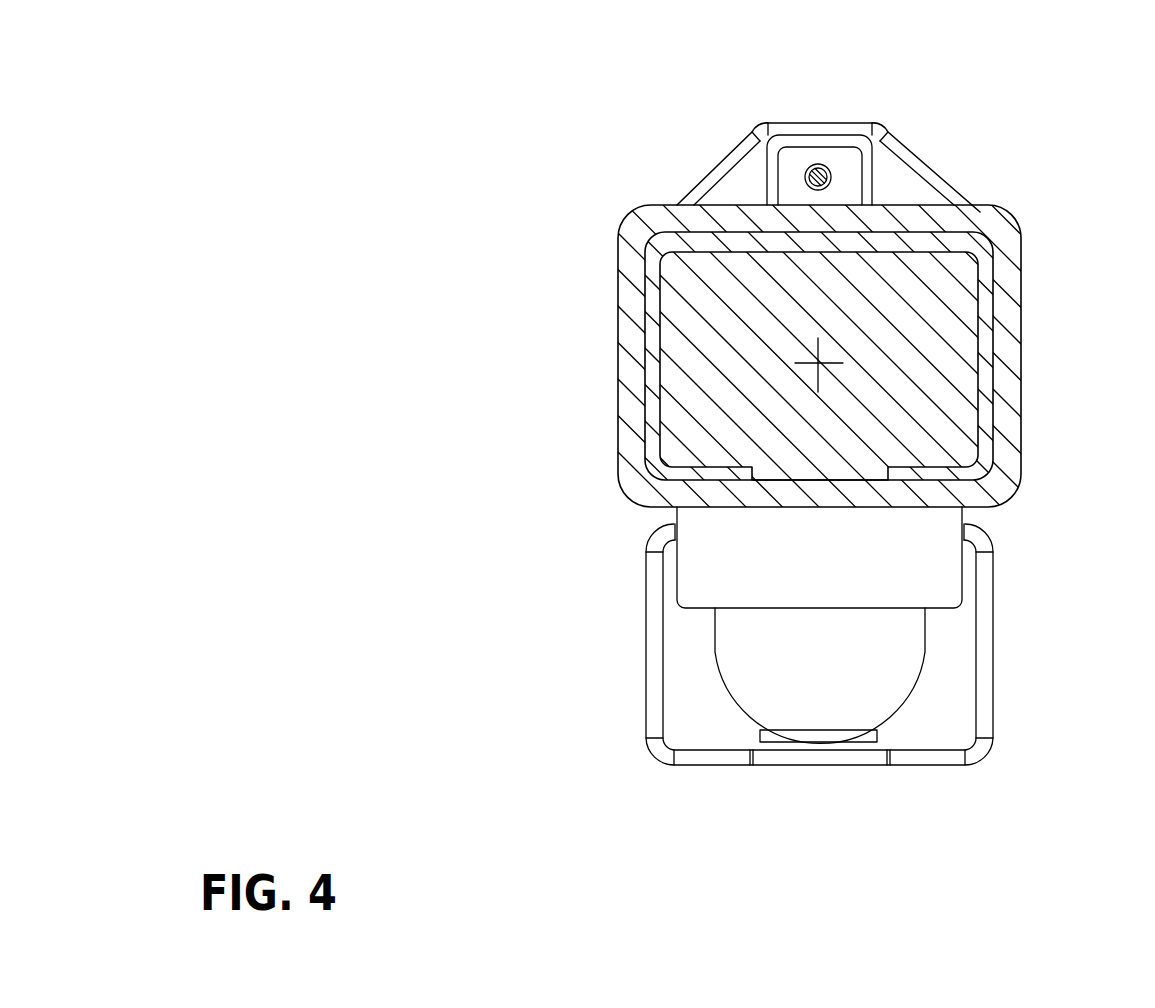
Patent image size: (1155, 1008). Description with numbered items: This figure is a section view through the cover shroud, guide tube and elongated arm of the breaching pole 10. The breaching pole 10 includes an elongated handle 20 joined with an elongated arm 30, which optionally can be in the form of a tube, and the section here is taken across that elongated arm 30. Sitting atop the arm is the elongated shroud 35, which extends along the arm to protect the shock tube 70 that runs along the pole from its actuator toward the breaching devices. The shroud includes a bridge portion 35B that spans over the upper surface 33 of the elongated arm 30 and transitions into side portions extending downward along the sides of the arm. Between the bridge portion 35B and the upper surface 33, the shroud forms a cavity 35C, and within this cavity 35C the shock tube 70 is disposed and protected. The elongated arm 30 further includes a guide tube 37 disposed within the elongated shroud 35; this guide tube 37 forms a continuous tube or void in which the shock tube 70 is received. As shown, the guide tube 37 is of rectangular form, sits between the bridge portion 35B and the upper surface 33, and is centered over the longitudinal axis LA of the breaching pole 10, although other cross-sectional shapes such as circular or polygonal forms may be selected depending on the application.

The breaching pole 10 is at (537, 312).
The elongated handle 20 is at (1003, 226).
The elongated arm 30 is at (987, 289).
The upper surface 33 is at (652, 236).
The elongated shroud 35 is at (697, 178).
The bridge portion 35B is at (789, 126).
The cavity 35C is at (738, 188).
The guide tube 37 is at (872, 177).
The shock tube 70 is at (826, 168).
The longitudinal axis LA is at (818, 363).